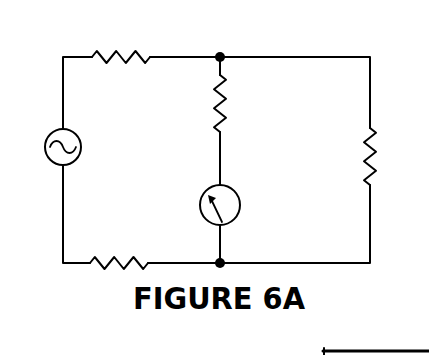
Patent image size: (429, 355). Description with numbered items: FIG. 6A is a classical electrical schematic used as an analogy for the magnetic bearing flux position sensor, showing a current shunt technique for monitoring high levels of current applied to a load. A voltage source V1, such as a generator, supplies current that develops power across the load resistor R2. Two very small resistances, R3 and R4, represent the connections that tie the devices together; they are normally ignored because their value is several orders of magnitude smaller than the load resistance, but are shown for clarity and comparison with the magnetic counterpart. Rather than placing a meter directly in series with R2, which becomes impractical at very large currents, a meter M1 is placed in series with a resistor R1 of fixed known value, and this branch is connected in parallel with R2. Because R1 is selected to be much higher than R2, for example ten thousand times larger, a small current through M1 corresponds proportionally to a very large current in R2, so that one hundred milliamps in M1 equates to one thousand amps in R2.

The resistor of fixed known value R1 is at (237, 103).
The load resistor R2 is at (387, 156).
The connecting resistor R3 is at (121, 42).
The connecting resistor R4 is at (119, 253).
The voltage source V1 is at (81, 147).
The meter M1 is at (240, 205).